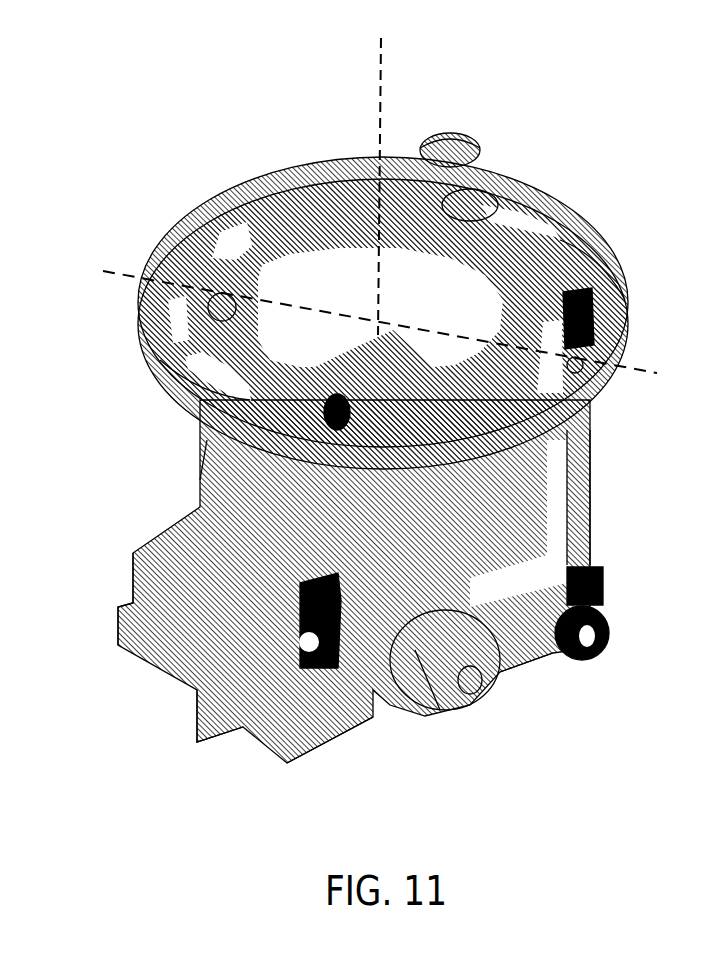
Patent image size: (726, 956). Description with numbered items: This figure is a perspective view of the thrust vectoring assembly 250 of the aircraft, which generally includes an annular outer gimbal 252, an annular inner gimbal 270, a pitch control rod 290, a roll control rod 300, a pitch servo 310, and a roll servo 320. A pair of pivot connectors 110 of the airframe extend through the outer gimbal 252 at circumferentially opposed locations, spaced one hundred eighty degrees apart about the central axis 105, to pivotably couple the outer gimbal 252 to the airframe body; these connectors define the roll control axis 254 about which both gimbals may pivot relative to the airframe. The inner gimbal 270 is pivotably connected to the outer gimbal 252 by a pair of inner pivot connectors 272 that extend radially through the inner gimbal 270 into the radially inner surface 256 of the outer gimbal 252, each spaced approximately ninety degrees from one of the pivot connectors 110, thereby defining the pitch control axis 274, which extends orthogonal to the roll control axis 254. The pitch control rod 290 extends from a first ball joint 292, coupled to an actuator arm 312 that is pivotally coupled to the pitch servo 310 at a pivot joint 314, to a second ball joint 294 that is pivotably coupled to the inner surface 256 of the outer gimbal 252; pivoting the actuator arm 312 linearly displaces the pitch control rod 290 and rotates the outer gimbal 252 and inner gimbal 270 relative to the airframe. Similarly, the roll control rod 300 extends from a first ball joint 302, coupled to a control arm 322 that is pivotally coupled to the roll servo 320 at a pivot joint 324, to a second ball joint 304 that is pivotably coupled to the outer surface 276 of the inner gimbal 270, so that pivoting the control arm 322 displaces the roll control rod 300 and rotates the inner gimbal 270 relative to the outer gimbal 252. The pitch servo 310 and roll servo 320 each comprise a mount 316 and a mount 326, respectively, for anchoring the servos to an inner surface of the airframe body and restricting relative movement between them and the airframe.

The central axis 105 is at (390, 8).
The pivot connectors 110 is at (463, 150).
The thrust vectoring assembly 250 is at (219, 86).
The outer gimbal 252 is at (586, 246).
The roll control axis 254 is at (462, 118).
The radially inner surface 256 is at (493, 230).
The inner gimbal 270 is at (517, 235).
The inner pivot connectors 272 is at (197, 272).
The pitch control axis 274 is at (112, 268).
The outer surface 276 is at (250, 395).
The pitch control rod 290 is at (595, 478).
The first ball joint 292 is at (612, 634).
The second ball joint 294 is at (596, 316).
The roll control rod 300 is at (210, 519).
The first ball joint 302 is at (268, 720).
The second ball joint 304 is at (250, 400).
The pitch servo 310 is at (375, 735).
The actuator arm 312 is at (500, 665).
The pivot joint 314 is at (475, 690).
The mount 316 is at (200, 700).
The roll servo 320 is at (545, 520).
The control arm 322 is at (415, 650).
The pivot joint 324 is at (535, 652).
The mount 326 is at (133, 603).